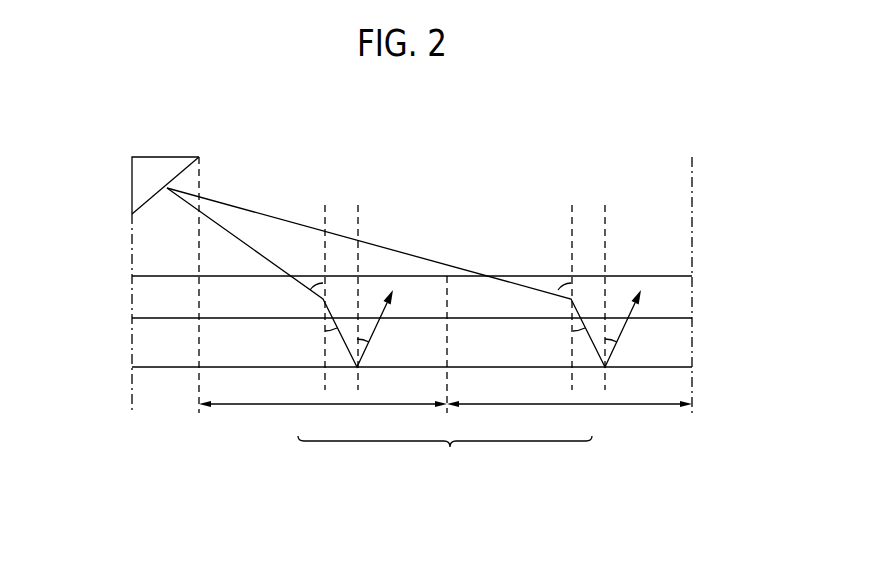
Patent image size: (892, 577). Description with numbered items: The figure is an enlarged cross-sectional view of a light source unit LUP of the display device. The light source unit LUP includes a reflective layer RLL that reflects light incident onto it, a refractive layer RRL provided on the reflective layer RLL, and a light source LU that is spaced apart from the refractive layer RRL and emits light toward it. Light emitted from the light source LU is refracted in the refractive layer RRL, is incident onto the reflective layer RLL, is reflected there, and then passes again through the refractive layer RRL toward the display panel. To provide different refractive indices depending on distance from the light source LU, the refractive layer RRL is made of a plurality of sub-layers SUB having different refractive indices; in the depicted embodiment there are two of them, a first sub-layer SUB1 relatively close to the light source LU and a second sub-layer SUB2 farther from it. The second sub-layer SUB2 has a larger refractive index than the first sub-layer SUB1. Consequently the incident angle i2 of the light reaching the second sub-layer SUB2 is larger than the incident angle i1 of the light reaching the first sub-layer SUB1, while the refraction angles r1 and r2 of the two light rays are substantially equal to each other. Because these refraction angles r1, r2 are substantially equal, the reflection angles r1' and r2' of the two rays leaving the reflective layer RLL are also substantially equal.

The light source LU is at (138, 172).
The light source unit LUP is at (665, 138).
The refractive layer RRL is at (688, 300).
The reflective layer RLL is at (688, 350).
The incident angle i1 is at (318, 285).
The refraction angle r1 is at (307, 341).
The reflection angle r1' is at (388, 342).
The incident angle i2 is at (566, 285).
The refraction angle r2 is at (553, 341).
The reflection angle r2' is at (637, 342).
The first sub-layer SUB1 is at (323, 417).
The second sub-layer SUB2 is at (569, 418).
The sub-layers SUB is at (445, 458).